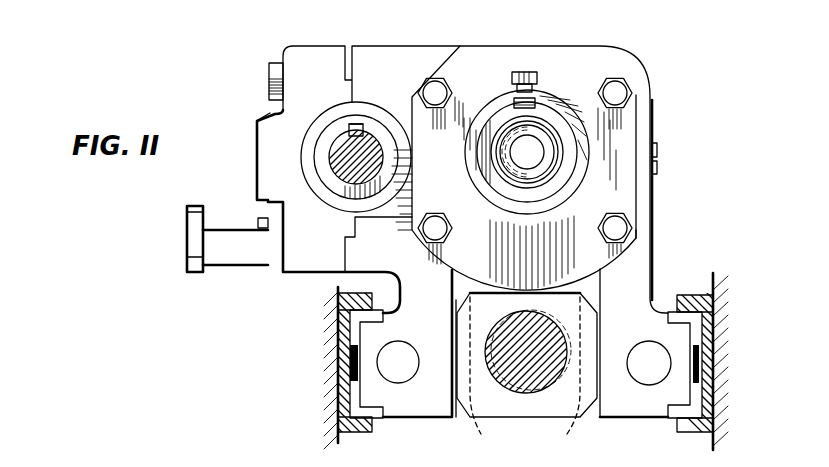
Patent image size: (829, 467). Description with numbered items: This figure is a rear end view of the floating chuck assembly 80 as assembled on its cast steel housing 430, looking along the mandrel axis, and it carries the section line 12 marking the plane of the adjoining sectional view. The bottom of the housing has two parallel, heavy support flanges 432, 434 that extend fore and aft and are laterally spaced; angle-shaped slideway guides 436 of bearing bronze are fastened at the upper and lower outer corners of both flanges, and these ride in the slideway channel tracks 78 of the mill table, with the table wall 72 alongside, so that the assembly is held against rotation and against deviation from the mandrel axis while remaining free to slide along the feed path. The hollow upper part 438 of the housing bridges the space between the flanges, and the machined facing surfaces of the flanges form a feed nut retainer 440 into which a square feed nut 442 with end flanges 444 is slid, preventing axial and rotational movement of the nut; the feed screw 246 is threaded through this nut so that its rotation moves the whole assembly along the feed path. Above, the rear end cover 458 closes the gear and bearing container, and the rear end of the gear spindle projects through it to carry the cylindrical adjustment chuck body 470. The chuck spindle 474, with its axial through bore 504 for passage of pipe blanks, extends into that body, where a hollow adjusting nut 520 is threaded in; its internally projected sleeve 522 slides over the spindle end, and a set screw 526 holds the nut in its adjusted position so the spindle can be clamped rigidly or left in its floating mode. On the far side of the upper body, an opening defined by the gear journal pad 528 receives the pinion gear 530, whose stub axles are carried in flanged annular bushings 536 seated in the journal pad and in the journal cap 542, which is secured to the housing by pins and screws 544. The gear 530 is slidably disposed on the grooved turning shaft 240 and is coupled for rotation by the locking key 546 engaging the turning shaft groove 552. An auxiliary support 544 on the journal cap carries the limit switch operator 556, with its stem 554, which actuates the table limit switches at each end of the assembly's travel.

The floating chuck assembly 80 is at (645, 48).
The section line 12- 12 is at (380, 27).
The auxiliary support 544 is at (279, 64).
The journal cap 542 is at (288, 126).
The rear end cover 458 is at (563, 48).
The hollow upper part of housing 438 is at (648, 102).
The housing 430 is at (637, 250).
The adjustment chuck body 470 is at (558, 102).
The adjusting nut 520 is at (510, 124).
The chuck spindle 474 is at (518, 182).
The axial through bore 504 is at (513, 165).
The internally projected sleeve 522 is at (516, 150).
The set screw 526 is at (526, 71).
The pinion gear 530 is at (336, 154).
The flanged annular bushings 536 is at (343, 104).
The turning shaft 240 is at (343, 170).
The locking key 546 is at (362, 125).
The turning shaft groove 552 is at (350, 126).
The pin 554 is at (235, 232).
The limit switch operator 556 is at (187, 220).
The gear journal pad 528 is at (302, 466).
The support flange 434 is at (413, 405).
The support flange 432 is at (620, 400).
The end flanges 444 is at (455, 335).
The square feed nut 442 is at (528, 418).
The feed screw 246 is at (532, 332).
The feed nut retainer 440 is at (529, 378).
The slideway guides 436 is at (352, 325).
The frame wall 72 is at (338, 370).
The slideway channel tracks 78 is at (356, 432).